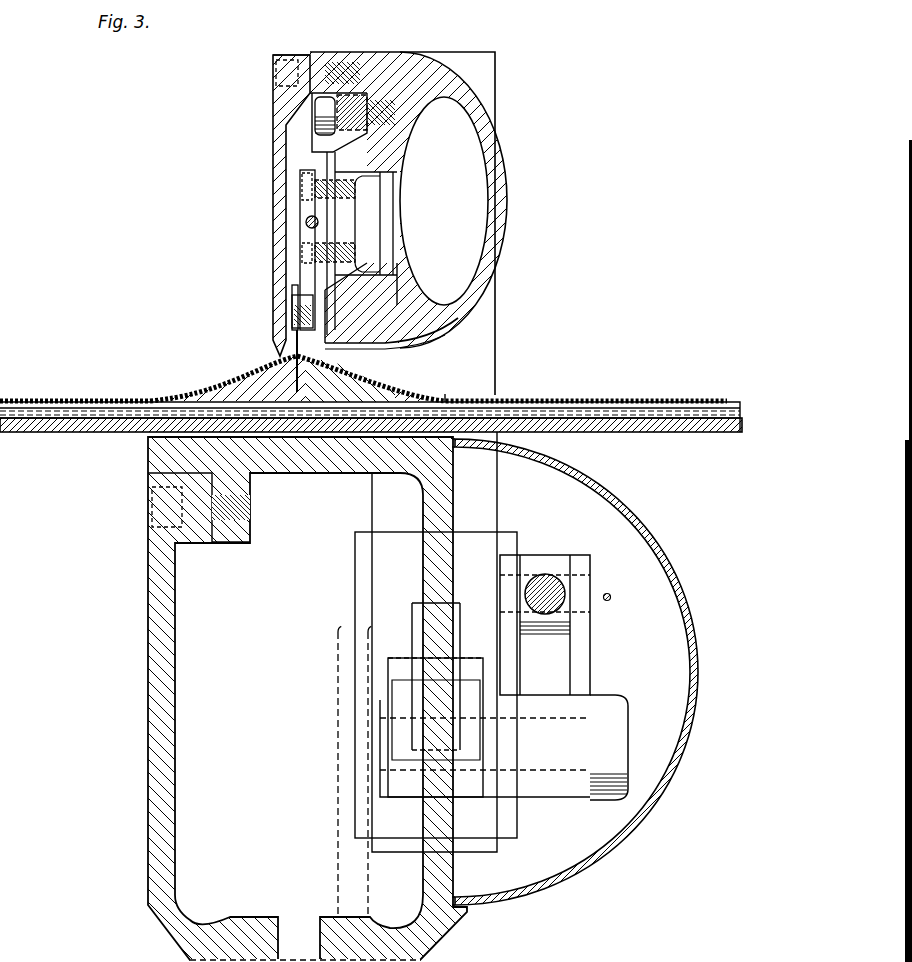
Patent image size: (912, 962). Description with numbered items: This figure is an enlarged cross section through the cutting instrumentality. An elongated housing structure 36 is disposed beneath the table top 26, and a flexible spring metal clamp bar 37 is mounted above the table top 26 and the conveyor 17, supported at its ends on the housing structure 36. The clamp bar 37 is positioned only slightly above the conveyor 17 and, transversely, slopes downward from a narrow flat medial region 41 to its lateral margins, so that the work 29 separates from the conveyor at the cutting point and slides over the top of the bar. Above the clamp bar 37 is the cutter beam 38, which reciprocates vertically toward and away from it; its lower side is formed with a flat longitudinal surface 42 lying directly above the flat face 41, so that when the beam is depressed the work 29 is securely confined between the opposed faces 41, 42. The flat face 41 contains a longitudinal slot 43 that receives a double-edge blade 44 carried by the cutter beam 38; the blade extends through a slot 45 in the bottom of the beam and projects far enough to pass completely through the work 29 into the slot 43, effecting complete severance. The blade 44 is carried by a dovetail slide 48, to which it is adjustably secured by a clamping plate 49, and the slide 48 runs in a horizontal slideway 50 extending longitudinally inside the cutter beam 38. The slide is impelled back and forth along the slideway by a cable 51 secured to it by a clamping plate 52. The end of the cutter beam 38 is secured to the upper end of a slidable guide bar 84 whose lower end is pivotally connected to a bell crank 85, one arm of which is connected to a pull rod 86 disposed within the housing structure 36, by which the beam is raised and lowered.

The conveyor 17 is at (742, 412).
The table top 26 is at (693, 433).
The work 29 is at (604, 400).
The housing structure 36 is at (148, 681).
The clamp bar 37 is at (215, 378).
The cutter beam 38 is at (497, 148).
The medial region 41 is at (312, 405).
The flat surface 42 is at (287, 348).
The slot 43 is at (275, 422).
The double-edge blade 44 is at (327, 346).
The slot 45 is at (287, 320).
The dovetail slide 48 is at (347, 213).
The clamping plate 49 is at (290, 298).
The slideway 50 is at (363, 272).
The cable 51 is at (305, 221).
The clamping plate 52 is at (333, 182).
The guide bar 84 is at (485, 502).
The bell crank 85 is at (585, 663).
The pull rod 86 is at (563, 610).